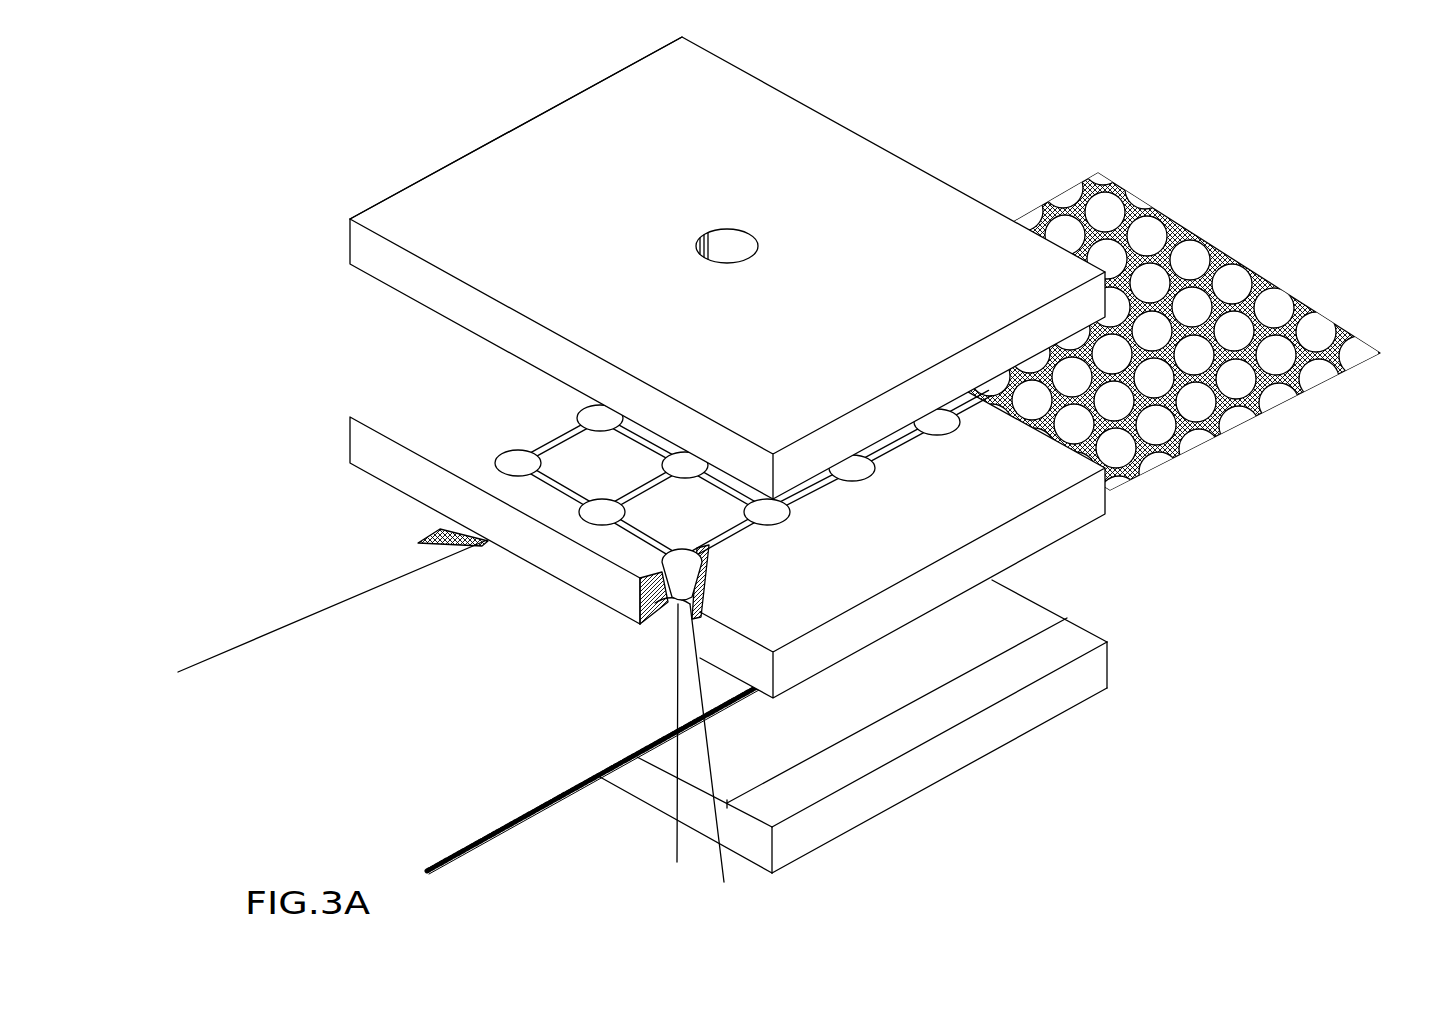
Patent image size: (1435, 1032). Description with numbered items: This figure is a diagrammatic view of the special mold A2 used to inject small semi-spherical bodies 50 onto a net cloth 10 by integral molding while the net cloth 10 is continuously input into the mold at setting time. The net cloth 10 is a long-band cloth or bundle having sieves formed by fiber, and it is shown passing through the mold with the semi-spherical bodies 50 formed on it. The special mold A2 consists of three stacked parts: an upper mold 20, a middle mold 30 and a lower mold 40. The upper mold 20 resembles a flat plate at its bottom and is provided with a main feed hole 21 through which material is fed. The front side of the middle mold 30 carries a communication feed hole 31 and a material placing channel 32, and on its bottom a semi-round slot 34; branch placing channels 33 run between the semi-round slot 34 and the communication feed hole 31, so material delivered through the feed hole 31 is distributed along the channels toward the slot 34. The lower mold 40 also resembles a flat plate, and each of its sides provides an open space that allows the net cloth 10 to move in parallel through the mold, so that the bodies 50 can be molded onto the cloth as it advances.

The special mold A2 is at (475, 138).
The upper mold 20 is at (763, 108).
The main feed hole 21 is at (740, 247).
The small semi-spherical bodies 50 is at (1322, 325).
The net cloth 10 is at (423, 530).
The middle mold 30 is at (1043, 487).
The communication feed hole 31 is at (517, 460).
The material placing channel 32 is at (560, 437).
The branch placing channels 33 is at (702, 761).
The semi-round slot 34 is at (657, 604).
The lower mold 40 is at (1073, 637).